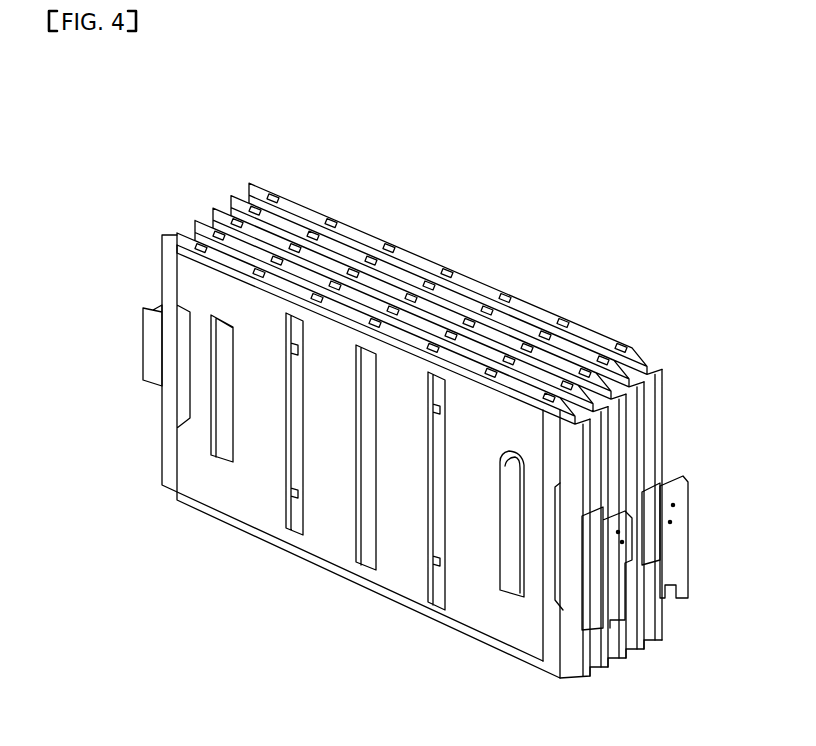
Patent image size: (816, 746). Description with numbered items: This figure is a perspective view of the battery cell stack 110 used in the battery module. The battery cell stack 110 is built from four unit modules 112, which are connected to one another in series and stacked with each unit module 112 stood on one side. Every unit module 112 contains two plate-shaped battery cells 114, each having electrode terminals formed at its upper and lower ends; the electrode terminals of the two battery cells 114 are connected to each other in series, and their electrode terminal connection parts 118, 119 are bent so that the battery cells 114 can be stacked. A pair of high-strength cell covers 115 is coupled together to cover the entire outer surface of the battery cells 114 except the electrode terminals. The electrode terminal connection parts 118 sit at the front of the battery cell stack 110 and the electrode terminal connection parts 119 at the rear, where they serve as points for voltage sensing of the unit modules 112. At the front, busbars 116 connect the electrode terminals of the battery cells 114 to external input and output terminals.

The battery cell stack 110 is at (118, 181).
The unit module 112 is at (252, 268).
The battery cell 114 is at (168, 241).
The high-strength cell cover 115 is at (222, 490).
The busbar 116 is at (595, 563).
The electrode terminal connection part 118 is at (657, 498).
The electrode terminal connection part 119 is at (155, 333).